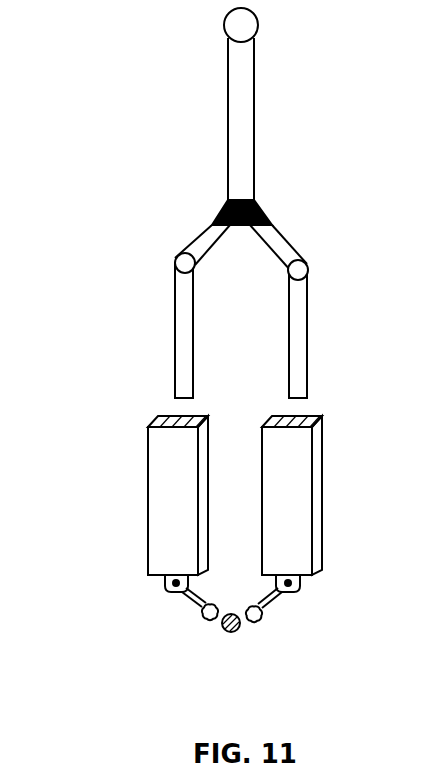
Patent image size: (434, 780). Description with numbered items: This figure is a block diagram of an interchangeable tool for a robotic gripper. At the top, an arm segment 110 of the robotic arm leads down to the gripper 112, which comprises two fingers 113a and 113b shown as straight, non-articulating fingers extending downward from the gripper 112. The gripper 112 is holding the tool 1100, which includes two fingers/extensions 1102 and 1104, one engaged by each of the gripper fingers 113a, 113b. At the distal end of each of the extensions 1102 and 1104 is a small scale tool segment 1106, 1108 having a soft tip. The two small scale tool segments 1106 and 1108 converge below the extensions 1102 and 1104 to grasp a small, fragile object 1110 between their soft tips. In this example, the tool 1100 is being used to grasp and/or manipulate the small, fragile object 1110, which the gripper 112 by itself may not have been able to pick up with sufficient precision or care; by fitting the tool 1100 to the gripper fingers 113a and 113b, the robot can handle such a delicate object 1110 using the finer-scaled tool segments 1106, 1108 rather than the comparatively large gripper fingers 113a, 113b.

The arm segment 110 is at (255, 110).
The gripper 112 is at (287, 238).
The finger 113a is at (173, 327).
The finger 113b is at (308, 327).
The tool 1100 is at (118, 406).
The finger/extension 1102 is at (148, 492).
The finger/extension 1104 is at (313, 480).
The small scale tool segment 1106 is at (188, 605).
The small scale tool segment 1108 is at (278, 600).
The small, fragile object 1110 is at (231, 632).